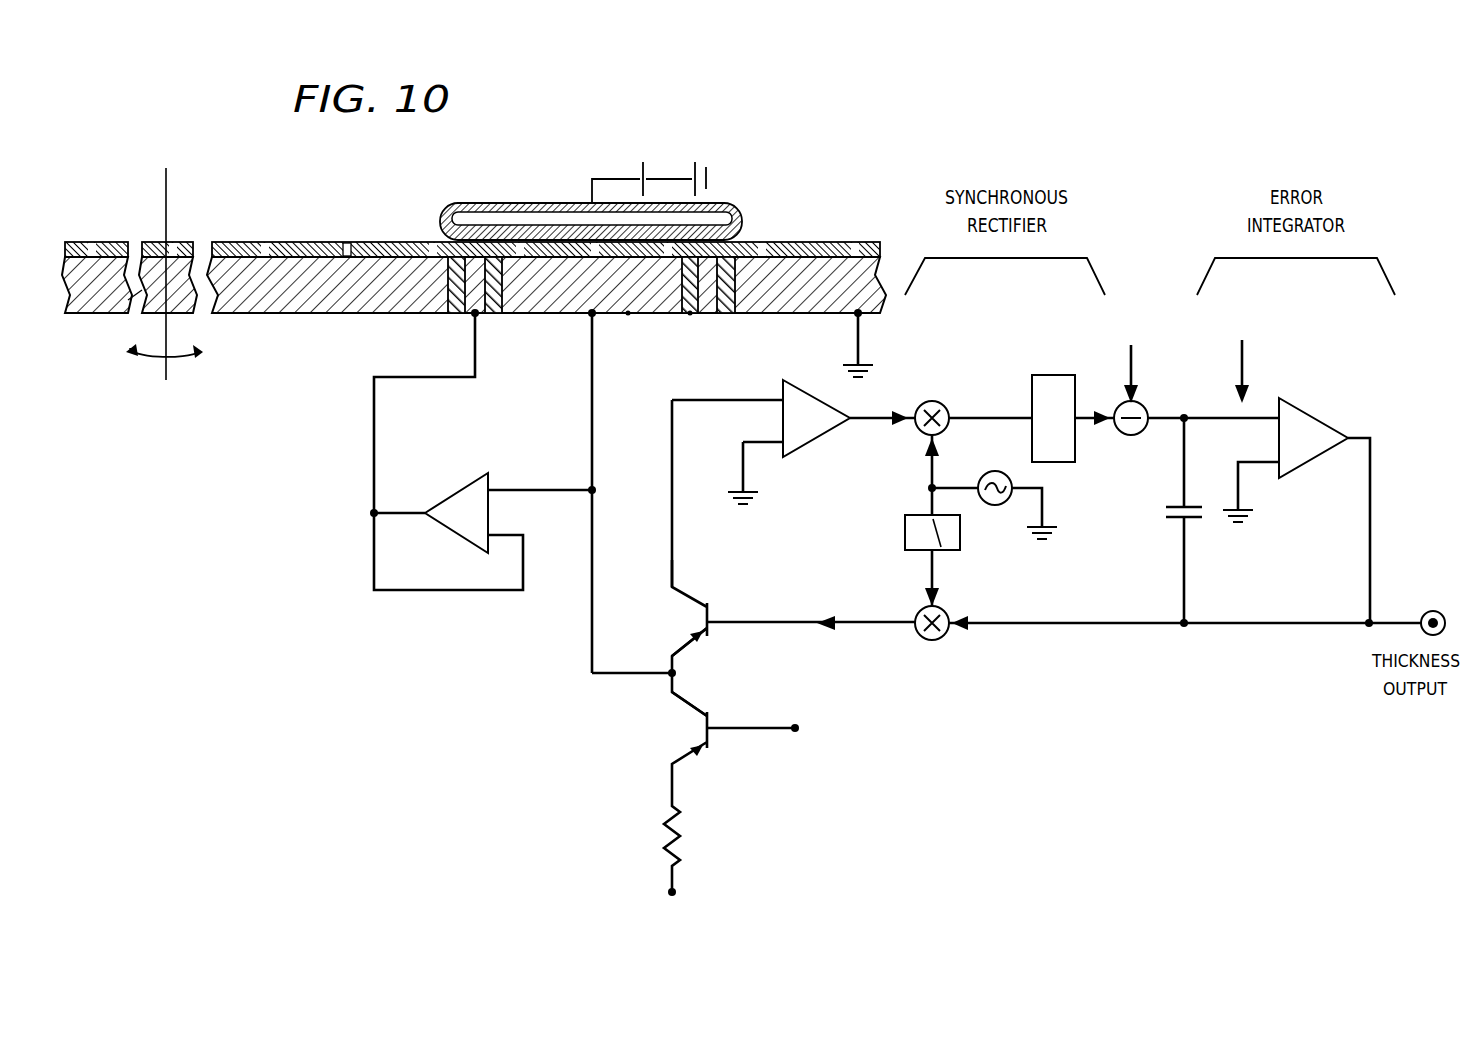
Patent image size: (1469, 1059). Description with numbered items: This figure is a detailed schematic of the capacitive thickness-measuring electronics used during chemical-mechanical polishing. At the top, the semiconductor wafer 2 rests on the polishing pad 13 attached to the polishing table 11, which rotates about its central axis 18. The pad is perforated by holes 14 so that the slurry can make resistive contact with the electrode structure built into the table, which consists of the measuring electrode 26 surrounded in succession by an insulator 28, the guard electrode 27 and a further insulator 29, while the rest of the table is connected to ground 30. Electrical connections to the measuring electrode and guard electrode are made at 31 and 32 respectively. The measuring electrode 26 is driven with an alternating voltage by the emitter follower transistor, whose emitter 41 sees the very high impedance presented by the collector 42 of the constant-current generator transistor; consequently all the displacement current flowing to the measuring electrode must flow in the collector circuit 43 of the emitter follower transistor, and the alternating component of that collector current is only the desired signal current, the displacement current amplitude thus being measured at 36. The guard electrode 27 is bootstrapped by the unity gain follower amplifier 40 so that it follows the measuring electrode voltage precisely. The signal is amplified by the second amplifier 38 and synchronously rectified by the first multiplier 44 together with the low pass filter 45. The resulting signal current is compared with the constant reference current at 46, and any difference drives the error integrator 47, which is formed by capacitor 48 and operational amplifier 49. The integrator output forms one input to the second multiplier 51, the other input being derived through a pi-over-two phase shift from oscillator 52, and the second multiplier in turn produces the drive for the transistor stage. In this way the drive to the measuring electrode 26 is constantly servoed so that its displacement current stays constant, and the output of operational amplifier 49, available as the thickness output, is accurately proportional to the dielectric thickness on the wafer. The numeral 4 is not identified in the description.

The semiconductor wafer 2 is at (497, 208).
The sensor capacitor 4 is at (735, 228).
The polishing table 11 is at (275, 300).
The polishing pad 13 is at (315, 241).
The holes 14 is at (348, 241).
The central axis 18 is at (166, 184).
The measuring electrode 26 is at (628, 315).
The guard electrode 27 is at (713, 313).
The insulator 28 is at (690, 313).
The insulator 29 is at (443, 312).
The ground 30 is at (850, 320).
The electrical connection to measuring electrode 31 is at (597, 313).
The electrical connection to guard electrode 32 is at (466, 312).
The amplitude measuring stage 36 is at (708, 613).
The amplifier (A2) 38 is at (822, 437).
The unity gain follower amplifier (A1) 40 is at (458, 492).
The emitter of transistor (Q1) 41 is at (696, 640).
The collector of transistor (Q2) 42 is at (693, 705).
The collector circuit of transistor (Q1) 43 is at (685, 590).
The multiplier (M1) 44 is at (937, 400).
The low pass filter 45 is at (1053, 375).
The comparison point for reference current (Io) 46 is at (1144, 401).
The error integrator 47 is at (1242, 357).
The capacitor 48 is at (1170, 527).
The operational amplifier (A3) 49 is at (1318, 410).
The multiplier (M2) 51 is at (930, 645).
The oscillator 52 is at (995, 507).